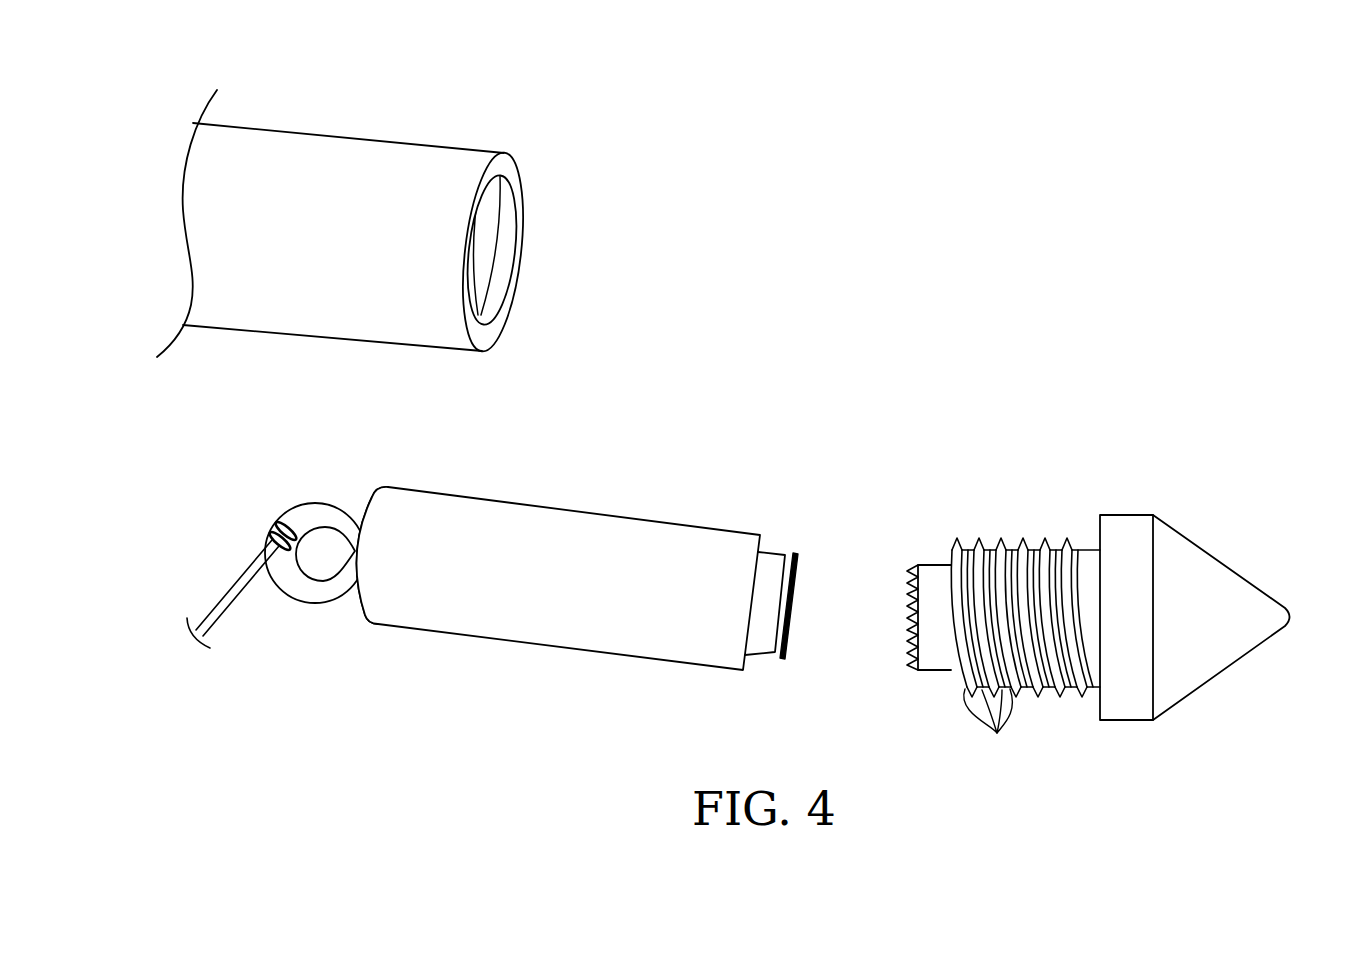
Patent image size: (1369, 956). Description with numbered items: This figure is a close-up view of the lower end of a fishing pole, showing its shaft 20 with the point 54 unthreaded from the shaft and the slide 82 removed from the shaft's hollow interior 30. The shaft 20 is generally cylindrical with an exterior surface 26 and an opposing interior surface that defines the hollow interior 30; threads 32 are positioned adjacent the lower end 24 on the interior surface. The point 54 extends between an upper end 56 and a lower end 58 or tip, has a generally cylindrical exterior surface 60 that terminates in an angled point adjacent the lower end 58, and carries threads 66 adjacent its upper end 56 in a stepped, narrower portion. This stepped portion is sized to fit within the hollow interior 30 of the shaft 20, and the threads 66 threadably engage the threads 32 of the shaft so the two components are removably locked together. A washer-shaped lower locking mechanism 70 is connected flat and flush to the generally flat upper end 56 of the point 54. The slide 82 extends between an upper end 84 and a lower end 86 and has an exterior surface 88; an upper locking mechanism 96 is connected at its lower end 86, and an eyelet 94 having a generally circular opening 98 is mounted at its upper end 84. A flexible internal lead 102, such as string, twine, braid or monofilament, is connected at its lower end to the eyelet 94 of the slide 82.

The shaft 20 is at (362, 210).
The lower end 24 is at (506, 166).
The exterior surface 26 is at (352, 251).
The hollow interior 30 is at (504, 236).
The threads 32 is at (488, 281).
The slide 82 is at (512, 562).
The upper end 84 is at (373, 498).
The lower end 86 is at (724, 531).
The exterior surface 88 is at (581, 591).
The eyelet 94 is at (306, 515).
The upper locking mechanism 96 is at (791, 533).
The circular opening 98 is at (320, 557).
The internal lead 102 is at (240, 586).
The point 54 is at (1012, 508).
The upper end 56 is at (941, 562).
The lower end 58 is at (1294, 618).
The exterior surface 60 is at (1142, 629).
The threads 66 is at (988, 723).
The lower locking mechanism 70 is at (921, 545).